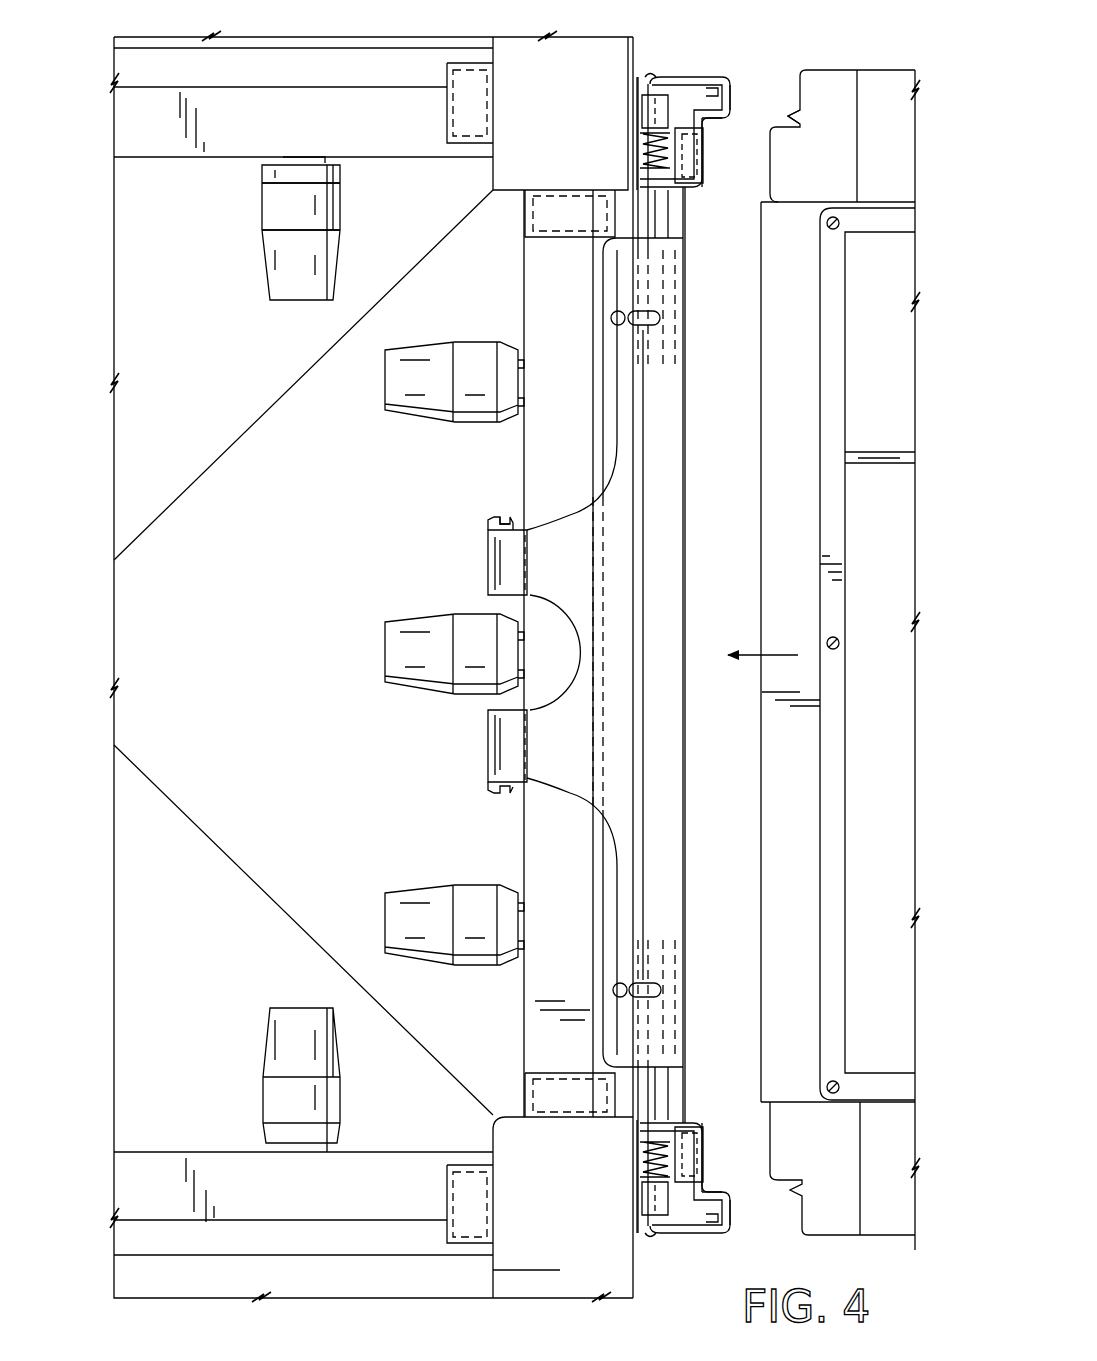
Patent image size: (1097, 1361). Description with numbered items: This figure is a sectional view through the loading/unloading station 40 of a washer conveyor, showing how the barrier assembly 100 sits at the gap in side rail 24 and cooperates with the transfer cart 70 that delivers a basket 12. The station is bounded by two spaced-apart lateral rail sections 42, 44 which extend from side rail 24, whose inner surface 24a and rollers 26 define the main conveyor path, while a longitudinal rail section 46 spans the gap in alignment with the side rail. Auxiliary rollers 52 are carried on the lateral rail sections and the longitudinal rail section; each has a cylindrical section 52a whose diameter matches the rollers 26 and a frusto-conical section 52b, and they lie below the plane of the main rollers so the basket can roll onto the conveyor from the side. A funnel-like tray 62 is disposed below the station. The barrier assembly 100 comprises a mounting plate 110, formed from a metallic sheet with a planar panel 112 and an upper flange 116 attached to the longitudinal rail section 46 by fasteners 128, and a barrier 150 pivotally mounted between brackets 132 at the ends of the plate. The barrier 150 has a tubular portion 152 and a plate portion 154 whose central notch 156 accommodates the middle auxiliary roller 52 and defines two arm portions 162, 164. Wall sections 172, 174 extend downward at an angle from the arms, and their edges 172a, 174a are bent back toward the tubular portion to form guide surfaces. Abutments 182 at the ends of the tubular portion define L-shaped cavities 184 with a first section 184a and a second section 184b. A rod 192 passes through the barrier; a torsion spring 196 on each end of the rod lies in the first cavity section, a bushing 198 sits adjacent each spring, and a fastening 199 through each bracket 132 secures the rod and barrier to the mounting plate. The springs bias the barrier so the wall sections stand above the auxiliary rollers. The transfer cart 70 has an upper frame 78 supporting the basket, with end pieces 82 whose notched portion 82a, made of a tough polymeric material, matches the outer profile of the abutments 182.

The basket 12 is at (820, 352).
The side rail 24 is at (505, 1175).
The inner surface of side rail 24a is at (492, 172).
The rollers 26 is at (485, 105).
The loading/unloading station 40 is at (152, 625).
The lateral rail section 42 is at (220, 107).
The lateral rail section 44 is at (165, 1172).
The longitudinal rail section 46 is at (548, 972).
The auxiliary rollers 52 is at (571, 240).
The cylindrical section of auxiliary roller 52a is at (276, 208).
The frusto-conical section of auxiliary roller 52b is at (288, 276).
The tray 62 is at (145, 342).
The transfer cart 70 is at (877, 63).
The upper frame 78 is at (895, 76).
The end pieces 82 is at (808, 72).
The notched portion 82a is at (790, 118).
The barrier assembly 100 is at (698, 401).
The mounting plate 110 is at (640, 1084).
The planar panel 112 is at (636, 1183).
The upper flange 116 is at (612, 940).
The fastener 128 is at (612, 321).
The bracket 132 is at (684, 90).
The barrier 150 is at (487, 584).
The tubular portion 152 is at (684, 596).
The plate portion 154 is at (575, 555).
The notch 156 is at (568, 690).
The arm portion 162 is at (540, 545).
The arm portion 164 is at (540, 770).
The wall section 172 is at (488, 563).
The edge of wall section 172a is at (497, 518).
The wall section 174 is at (490, 738).
The edge of wall section 174a is at (497, 795).
The abutment 182 is at (731, 75).
The cavity 184 is at (720, 100).
The first section of cavity 184a is at (705, 162).
The second section of cavity 184b is at (740, 116).
The rod 192 is at (656, 218).
The torsion spring 196 is at (648, 153).
The bushing 198 is at (645, 110).
The fastening 199 is at (652, 76).